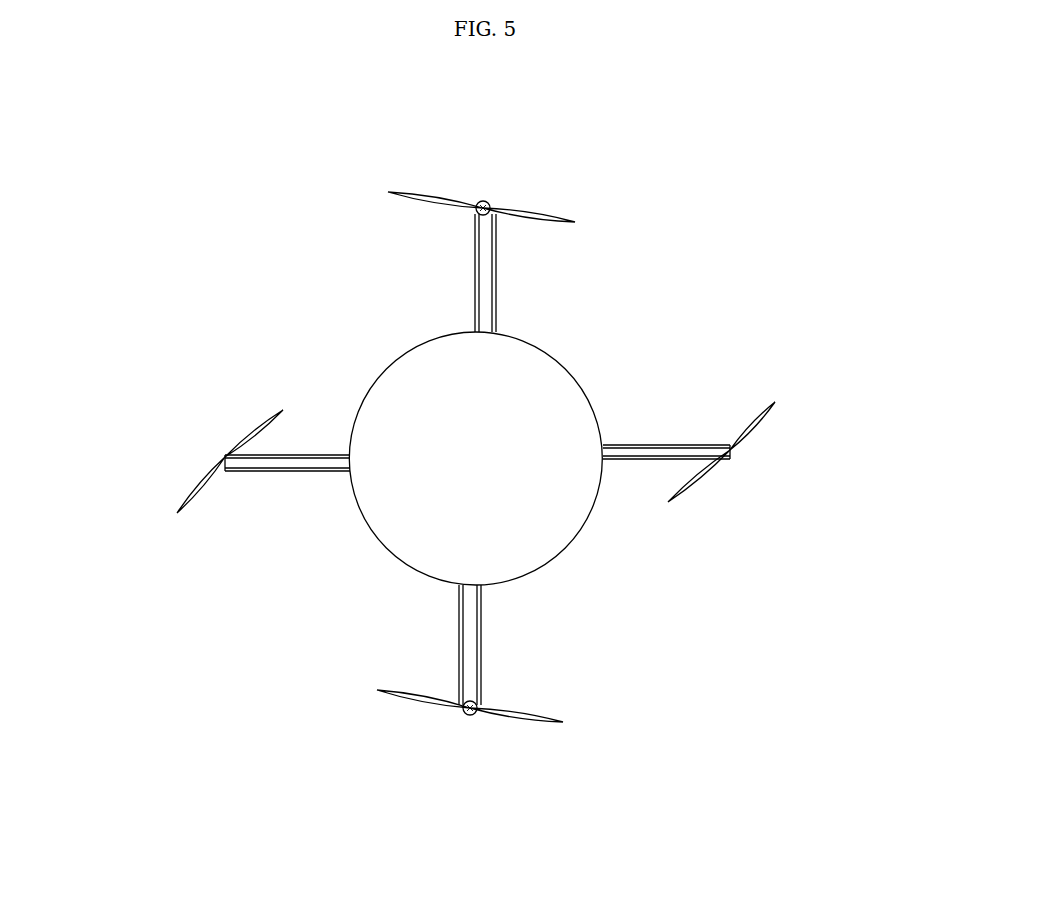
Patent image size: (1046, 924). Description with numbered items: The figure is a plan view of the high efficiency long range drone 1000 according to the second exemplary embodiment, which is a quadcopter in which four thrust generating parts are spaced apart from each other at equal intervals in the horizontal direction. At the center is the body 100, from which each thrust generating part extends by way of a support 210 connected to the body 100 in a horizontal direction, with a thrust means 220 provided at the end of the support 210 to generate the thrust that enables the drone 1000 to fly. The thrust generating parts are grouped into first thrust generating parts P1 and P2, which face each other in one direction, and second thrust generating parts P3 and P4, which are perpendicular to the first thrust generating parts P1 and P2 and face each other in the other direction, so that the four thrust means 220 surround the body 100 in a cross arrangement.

The high efficiency long range drone 1000 is at (503, 464).
The body 100 is at (522, 507).
The support 210 is at (327, 467).
The thrust means 220 is at (451, 468).
The first thrust generating part P1 is at (488, 188).
The first thrust generating part P2 is at (484, 742).
The second thrust generating part P3 is at (230, 438).
The second thrust generating part P4 is at (782, 400).